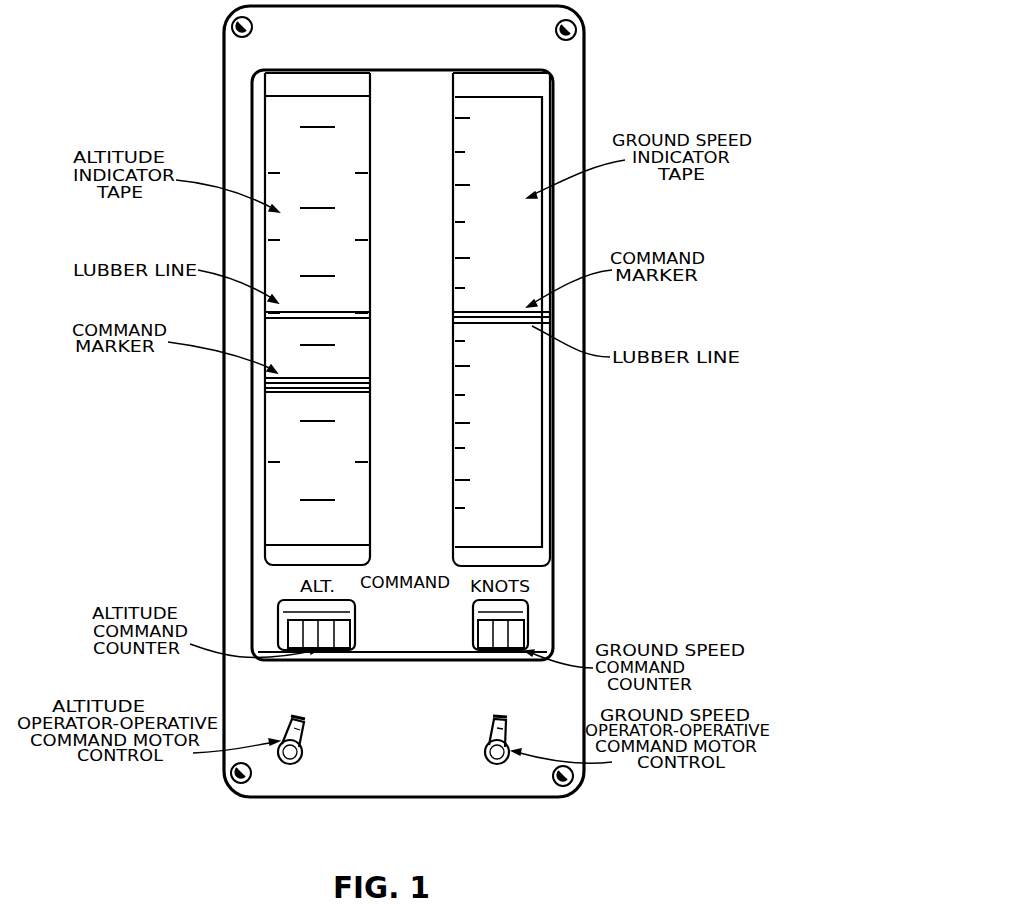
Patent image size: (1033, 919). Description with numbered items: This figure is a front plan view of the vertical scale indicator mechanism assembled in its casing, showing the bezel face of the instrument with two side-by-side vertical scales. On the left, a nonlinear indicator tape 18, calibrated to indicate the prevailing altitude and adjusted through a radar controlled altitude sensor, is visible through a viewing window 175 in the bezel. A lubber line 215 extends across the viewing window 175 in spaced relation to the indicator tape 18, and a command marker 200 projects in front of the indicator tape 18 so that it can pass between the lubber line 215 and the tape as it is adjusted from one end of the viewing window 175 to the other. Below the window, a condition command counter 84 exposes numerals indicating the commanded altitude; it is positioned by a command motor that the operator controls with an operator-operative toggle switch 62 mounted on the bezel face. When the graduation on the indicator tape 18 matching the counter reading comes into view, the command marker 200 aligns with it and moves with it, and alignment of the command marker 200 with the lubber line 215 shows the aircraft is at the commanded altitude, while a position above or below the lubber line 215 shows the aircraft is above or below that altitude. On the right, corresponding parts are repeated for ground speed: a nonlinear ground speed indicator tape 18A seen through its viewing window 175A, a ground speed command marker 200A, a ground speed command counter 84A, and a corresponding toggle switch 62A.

The indicator tape 18 is at (355, 222).
The viewing window 175 is at (265, 122).
The lubber line 215 is at (352, 309).
The command marker 200 is at (265, 387).
The ground speed indicator tape 18A is at (524, 128).
The viewing window of the ground speed indicator 175A is at (540, 218).
The ground speed command marker 200A is at (540, 318).
The condition command counter 84 is at (333, 626).
The ground speed command counter 84A is at (524, 622).
The operator-operative toggle switch 62 is at (298, 750).
The ground speed operator-operative toggle switch 62A is at (488, 742).